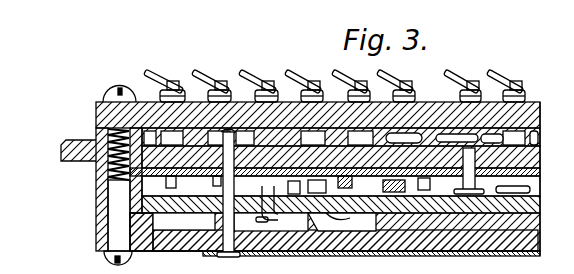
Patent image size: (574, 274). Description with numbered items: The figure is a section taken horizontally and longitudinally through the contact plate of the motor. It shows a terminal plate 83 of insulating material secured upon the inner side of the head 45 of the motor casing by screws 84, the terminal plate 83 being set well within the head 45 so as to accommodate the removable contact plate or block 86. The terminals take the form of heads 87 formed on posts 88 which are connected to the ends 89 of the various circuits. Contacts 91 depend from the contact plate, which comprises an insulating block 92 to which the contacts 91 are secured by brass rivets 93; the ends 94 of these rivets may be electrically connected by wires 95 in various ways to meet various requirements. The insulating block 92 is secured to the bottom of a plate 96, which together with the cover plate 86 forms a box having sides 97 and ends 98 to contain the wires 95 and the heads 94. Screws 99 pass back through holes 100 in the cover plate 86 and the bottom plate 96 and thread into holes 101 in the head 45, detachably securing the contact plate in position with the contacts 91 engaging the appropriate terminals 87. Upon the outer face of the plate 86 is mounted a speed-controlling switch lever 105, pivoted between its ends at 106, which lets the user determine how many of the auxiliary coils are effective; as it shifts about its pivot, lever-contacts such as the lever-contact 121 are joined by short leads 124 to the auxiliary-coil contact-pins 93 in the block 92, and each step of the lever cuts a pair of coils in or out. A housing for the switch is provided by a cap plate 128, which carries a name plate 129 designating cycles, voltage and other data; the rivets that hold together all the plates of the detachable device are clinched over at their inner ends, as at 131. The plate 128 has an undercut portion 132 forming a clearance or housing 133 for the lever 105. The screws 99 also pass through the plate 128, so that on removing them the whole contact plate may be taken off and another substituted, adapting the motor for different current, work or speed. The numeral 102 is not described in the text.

The head 45 is at (55, 136).
The terminal plate 83 is at (332, 93).
The screws 84 is at (105, 86).
The contact plate or block 86 is at (532, 196).
The heads 87 is at (531, 123).
The posts 88 is at (167, 73).
The ends of circuits 89 is at (236, 70).
The contacts 91 is at (457, 139).
The insulating block 92 is at (532, 151).
The brass rivets 93 is at (493, 139).
The ends of rivets 94 is at (532, 181).
The wires 95 is at (446, 184).
The plate 96 is at (532, 165).
The sides 97 is at (206, 186).
The ends 98 is at (163, 185).
The screws 99 is at (103, 252).
The holes 100 is at (97, 198).
The holes 101 is at (100, 152).
The pipe 102 is at (404, 139).
The speed-controlling switch lever 105 is at (272, 209).
The pivot 106 is at (240, 193).
The lever-contact 121 is at (302, 218).
The leads 124 is at (342, 222).
The plate 128 is at (148, 242).
The name plate 129 is at (512, 247).
The clinched rivet ends 131 is at (232, 133).
The undercut portion 132 is at (345, 252).
The clearance or housing 133 is at (184, 222).